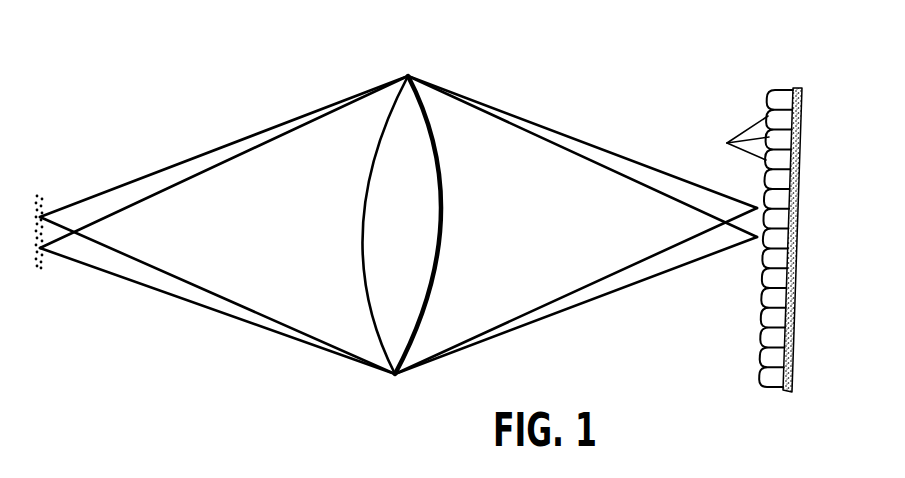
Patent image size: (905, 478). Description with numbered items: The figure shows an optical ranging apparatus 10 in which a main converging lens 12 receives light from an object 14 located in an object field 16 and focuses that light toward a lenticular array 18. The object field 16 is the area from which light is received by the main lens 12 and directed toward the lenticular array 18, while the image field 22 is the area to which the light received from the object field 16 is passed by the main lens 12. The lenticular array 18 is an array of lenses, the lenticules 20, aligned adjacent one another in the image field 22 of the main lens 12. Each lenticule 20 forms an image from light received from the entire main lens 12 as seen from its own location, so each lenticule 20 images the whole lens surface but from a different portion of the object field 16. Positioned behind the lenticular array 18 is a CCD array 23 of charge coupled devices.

The optical ranging apparatus 10 is at (203, 360).
The main converging lens 12 is at (410, 118).
The object 14 is at (35, 194).
The object field 16 is at (236, 133).
The lenticular array 18 is at (783, 90).
The lenticule 20 is at (727, 140).
The image field 22 is at (611, 147).
The CCD array 23 is at (800, 98).